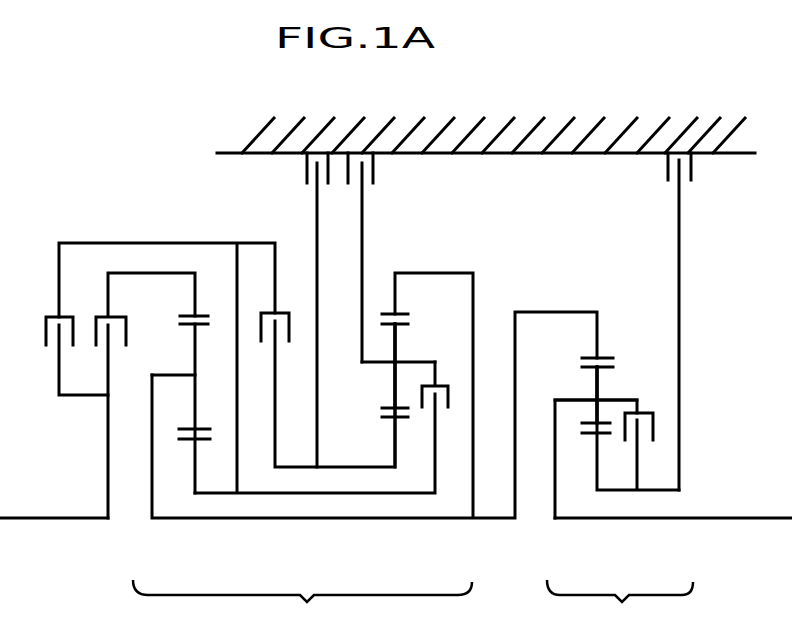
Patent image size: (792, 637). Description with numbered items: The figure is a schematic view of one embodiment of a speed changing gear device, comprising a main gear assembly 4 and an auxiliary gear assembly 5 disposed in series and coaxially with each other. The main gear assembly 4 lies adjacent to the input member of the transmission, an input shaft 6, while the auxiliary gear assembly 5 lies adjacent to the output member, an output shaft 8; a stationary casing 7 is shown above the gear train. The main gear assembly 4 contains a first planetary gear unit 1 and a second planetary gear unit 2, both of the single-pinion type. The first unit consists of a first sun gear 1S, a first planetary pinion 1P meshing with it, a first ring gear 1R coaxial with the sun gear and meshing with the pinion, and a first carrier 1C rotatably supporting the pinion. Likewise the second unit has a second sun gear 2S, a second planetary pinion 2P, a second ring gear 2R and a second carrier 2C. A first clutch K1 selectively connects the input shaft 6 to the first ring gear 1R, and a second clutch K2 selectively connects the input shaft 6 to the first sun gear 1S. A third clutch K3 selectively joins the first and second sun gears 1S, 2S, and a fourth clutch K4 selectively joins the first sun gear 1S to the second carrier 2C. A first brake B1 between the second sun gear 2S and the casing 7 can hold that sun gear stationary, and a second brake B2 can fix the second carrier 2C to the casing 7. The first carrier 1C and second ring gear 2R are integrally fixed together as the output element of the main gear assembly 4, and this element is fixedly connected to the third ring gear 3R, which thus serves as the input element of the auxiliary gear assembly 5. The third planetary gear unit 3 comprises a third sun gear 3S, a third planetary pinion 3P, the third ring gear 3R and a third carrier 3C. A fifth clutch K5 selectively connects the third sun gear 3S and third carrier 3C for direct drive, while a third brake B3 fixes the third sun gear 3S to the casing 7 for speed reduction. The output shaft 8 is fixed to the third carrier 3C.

The first planetary gear unit 1 is at (184, 455).
The second planetary gear unit 2 is at (403, 455).
The third planetary gear unit 3 is at (625, 347).
The main gear assembly 4 is at (302, 608).
The auxiliary gear assembly 5 is at (620, 608).
The input shaft 6 is at (45, 518).
The casing 7 is at (537, 140).
The output shaft 8 is at (748, 518).
The first ring gear 1R is at (200, 317).
The first planetary pinion 1P is at (200, 428).
The first sun gear 1S is at (203, 440).
The first carrier 1C is at (162, 375).
The second ring gear 2R is at (405, 313).
The second planetary pinion 2P is at (395, 378).
The second sun gear 2S is at (382, 417).
The second carrier 2C is at (373, 362).
The third ring gear 3R is at (590, 358).
The third planetary pinion 3P is at (600, 385).
The third sun gear 3S is at (590, 437).
The third carrier 3C is at (567, 400).
The first clutch K1 is at (145, 395).
The second clutch K2 is at (61, 338).
The third clutch K3 is at (287, 354).
The fourth clutch K4 is at (443, 365).
The fifth clutch K5 is at (653, 414).
The first brake B1 is at (295, 310).
The second brake B2 is at (382, 257).
The third brake B3 is at (700, 321).